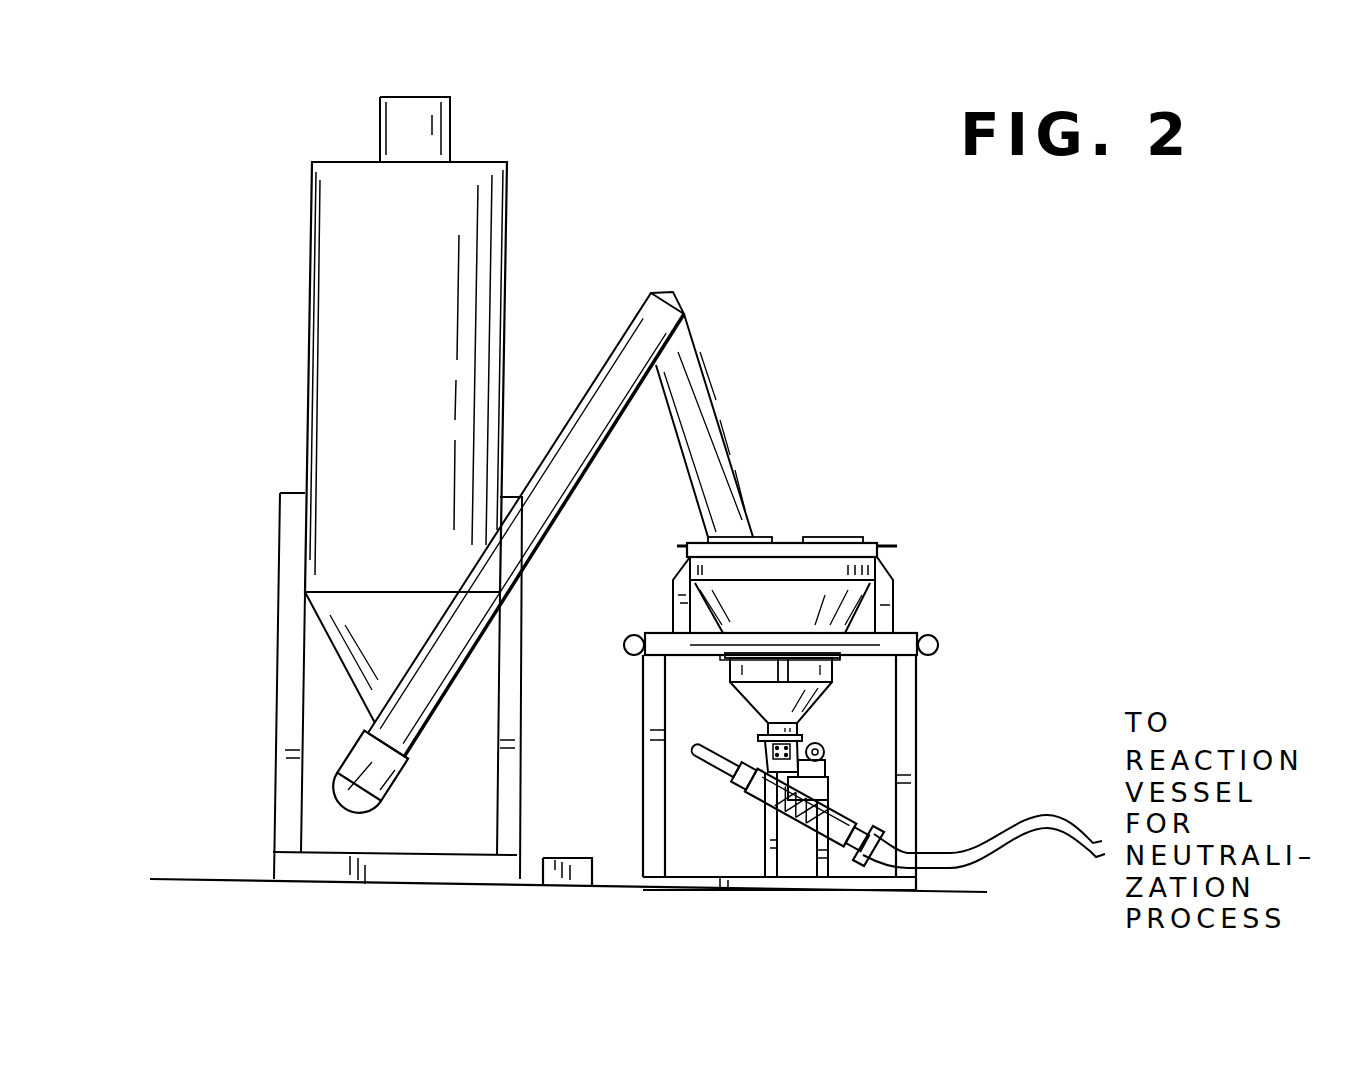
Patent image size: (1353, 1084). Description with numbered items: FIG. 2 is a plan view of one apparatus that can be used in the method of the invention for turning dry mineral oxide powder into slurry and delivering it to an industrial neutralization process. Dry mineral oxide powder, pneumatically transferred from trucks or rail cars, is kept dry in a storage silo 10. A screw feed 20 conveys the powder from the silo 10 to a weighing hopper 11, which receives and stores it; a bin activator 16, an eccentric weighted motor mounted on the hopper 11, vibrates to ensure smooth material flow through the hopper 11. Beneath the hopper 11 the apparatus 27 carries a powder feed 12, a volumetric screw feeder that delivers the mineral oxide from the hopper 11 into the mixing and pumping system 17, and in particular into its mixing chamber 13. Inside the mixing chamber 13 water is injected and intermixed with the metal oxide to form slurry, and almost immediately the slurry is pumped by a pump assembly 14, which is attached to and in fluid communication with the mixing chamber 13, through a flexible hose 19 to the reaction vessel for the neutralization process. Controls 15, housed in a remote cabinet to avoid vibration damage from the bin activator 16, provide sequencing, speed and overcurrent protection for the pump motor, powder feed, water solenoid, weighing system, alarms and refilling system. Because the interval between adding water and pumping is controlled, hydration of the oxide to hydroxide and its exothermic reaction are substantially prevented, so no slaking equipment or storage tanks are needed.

The storage silo 10 is at (505, 251).
The weighing hopper 11 is at (824, 541).
The powder feed 12 is at (802, 733).
The mixing chamber 13 is at (786, 808).
The pump assembly 14 is at (880, 829).
The controls 15 is at (558, 880).
The bin activator 16 is at (745, 697).
The mixing and pumping system 17 is at (778, 805).
The flexible hose 19 is at (1063, 826).
The screw feed 20 is at (578, 486).
The apparatus 27 is at (960, 642).